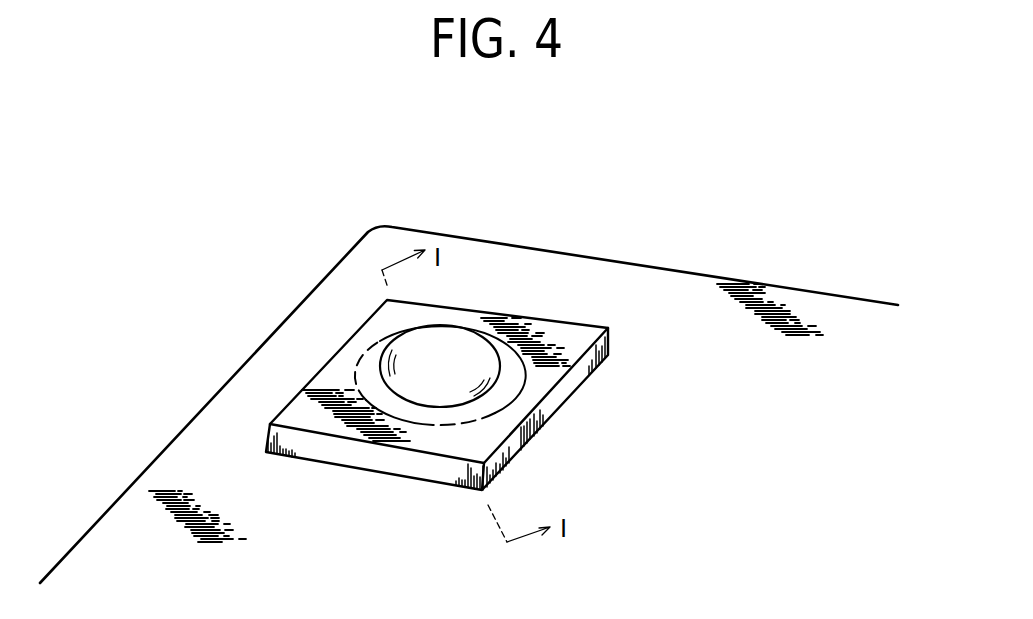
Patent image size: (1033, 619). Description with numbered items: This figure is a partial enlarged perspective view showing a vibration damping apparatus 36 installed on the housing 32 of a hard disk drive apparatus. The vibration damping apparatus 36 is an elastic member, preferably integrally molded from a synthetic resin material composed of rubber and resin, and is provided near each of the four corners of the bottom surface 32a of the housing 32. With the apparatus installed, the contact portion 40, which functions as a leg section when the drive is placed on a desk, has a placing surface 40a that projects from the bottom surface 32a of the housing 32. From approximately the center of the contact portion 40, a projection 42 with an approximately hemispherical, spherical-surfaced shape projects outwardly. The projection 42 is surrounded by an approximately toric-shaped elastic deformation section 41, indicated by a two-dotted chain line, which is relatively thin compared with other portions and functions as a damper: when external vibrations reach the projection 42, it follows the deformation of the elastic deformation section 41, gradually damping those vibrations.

The housing 32 is at (150, 463).
The bottom surface 32a is at (663, 295).
The vibration damping apparatus 36 is at (506, 303).
The contact portion 40 is at (537, 438).
The placing surface 40a is at (328, 382).
The elastic deformation section 41 is at (520, 392).
The projection 42 is at (433, 338).